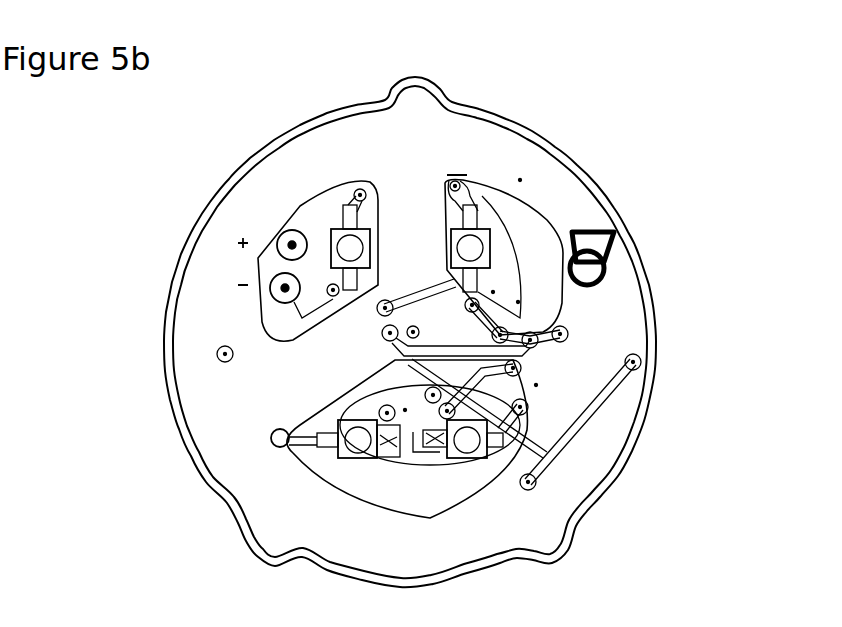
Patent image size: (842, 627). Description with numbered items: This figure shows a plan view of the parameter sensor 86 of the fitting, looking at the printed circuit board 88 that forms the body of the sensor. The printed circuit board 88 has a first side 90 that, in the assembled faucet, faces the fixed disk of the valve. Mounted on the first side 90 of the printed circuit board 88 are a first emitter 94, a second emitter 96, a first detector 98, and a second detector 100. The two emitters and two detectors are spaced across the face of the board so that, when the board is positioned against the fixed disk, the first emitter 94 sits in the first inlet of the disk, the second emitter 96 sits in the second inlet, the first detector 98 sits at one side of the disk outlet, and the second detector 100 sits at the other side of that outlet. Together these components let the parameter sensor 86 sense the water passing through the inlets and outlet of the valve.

The circuit board assembly 86 is at (588, 91).
The circuit board outer edge 88 is at (657, 331).
The circuit board 90 is at (208, 320).
The first light emitting diode D1 94 is at (470, 247).
The second light emitting diode D2 96 is at (350, 250).
The first transistor Q1 98 is at (470, 435).
The second transistor Q2 100 is at (358, 443).